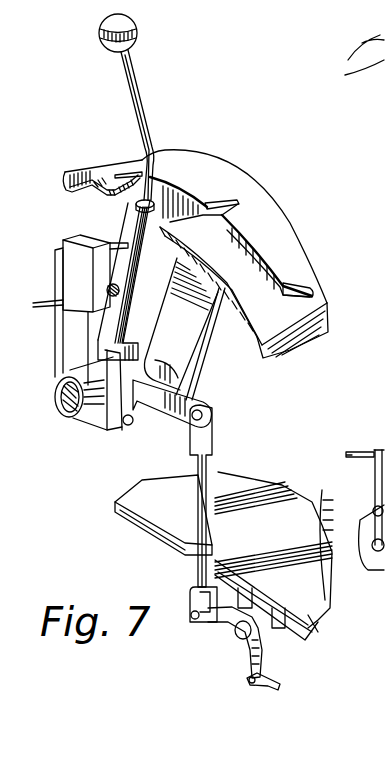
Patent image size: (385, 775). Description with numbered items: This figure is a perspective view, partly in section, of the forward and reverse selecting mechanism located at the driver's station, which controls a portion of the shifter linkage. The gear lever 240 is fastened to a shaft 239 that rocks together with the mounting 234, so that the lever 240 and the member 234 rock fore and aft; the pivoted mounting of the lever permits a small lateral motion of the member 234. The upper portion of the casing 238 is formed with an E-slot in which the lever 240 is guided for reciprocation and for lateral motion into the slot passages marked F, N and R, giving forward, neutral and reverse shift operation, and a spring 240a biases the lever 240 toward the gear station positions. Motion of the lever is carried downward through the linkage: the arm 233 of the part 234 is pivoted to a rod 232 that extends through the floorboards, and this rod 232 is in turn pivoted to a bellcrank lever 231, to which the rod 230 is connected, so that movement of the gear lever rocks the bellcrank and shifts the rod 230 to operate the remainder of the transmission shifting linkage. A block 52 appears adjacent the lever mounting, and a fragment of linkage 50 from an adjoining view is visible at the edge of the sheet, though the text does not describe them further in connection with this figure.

The gear lever 240 is at (140, 96).
The spring 240a is at (115, 295).
The casing 238 is at (313, 303).
The solenoid block 52 is at (67, 277).
The shaft 239 is at (60, 410).
The mounting 234 is at (133, 407).
The arm 233 is at (188, 395).
The rod 232 is at (210, 467).
The bellcrank lever 231 is at (227, 623).
The rod 230 is at (267, 676).
The linkage 50 is at (365, 520).